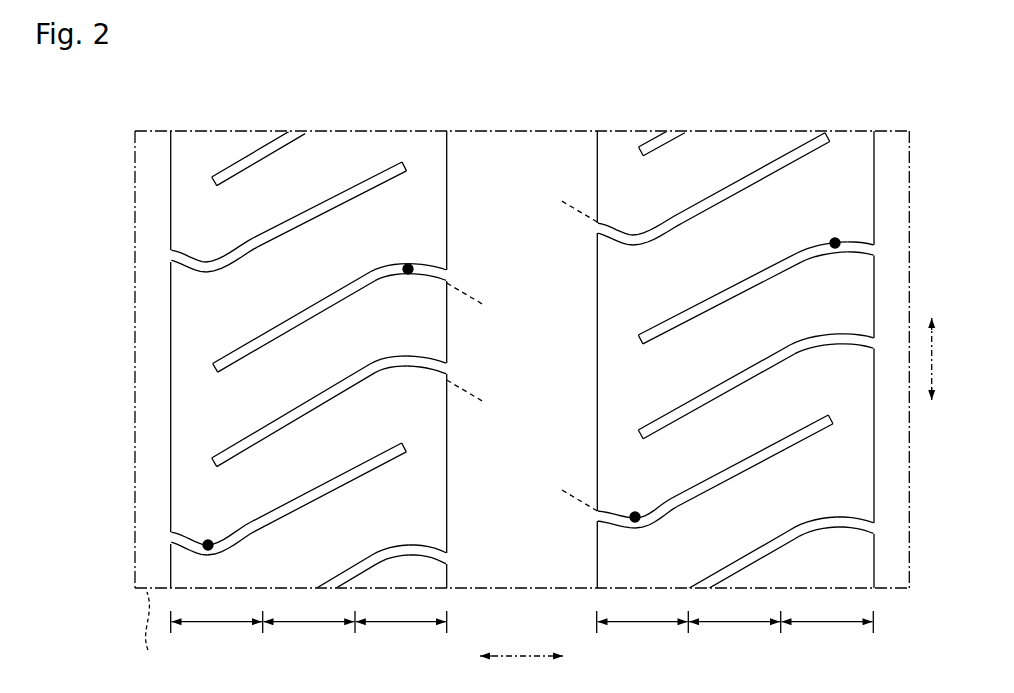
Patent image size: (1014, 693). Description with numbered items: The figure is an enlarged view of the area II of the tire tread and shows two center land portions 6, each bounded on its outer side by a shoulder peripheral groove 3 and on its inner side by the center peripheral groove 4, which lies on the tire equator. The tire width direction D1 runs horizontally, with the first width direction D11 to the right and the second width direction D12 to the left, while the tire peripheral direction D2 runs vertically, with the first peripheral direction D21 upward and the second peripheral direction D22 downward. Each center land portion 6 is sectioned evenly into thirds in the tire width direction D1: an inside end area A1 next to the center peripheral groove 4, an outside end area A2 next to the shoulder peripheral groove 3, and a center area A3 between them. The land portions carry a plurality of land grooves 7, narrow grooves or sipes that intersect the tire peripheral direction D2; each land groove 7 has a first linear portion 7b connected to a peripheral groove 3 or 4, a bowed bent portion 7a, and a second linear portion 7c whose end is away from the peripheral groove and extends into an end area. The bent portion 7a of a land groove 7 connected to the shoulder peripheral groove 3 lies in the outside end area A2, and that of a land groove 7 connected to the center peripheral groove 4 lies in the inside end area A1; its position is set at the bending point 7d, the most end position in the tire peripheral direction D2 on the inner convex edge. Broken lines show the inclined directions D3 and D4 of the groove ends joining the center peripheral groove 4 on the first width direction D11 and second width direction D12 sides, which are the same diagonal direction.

The shoulder peripheral groove 3 is at (153, 131).
The center land portion 6 is at (321, 131).
The center peripheral groove 4 is at (518, 131).
The land groove 7 is at (412, 192).
The bent portion 7a is at (392, 267).
The first linear portion 7b is at (432, 281).
The second linear portion 7c is at (283, 341).
The bending point 7d is at (406, 276).
The inclined direction D3 is at (578, 210).
The inclined direction D4 is at (470, 287).
The tire width direction D1 is at (521, 662).
The first width direction D11 is at (573, 656).
The second width direction D12 is at (470, 656).
The tire peripheral direction D2 is at (937, 360).
The first peripheral direction D21 is at (932, 314).
The second peripheral direction D22 is at (934, 404).
The inside end area A1 is at (521, 618).
The outside end area A2 is at (522, 618).
The center area A3 is at (522, 613).
The area II is at (152, 630).